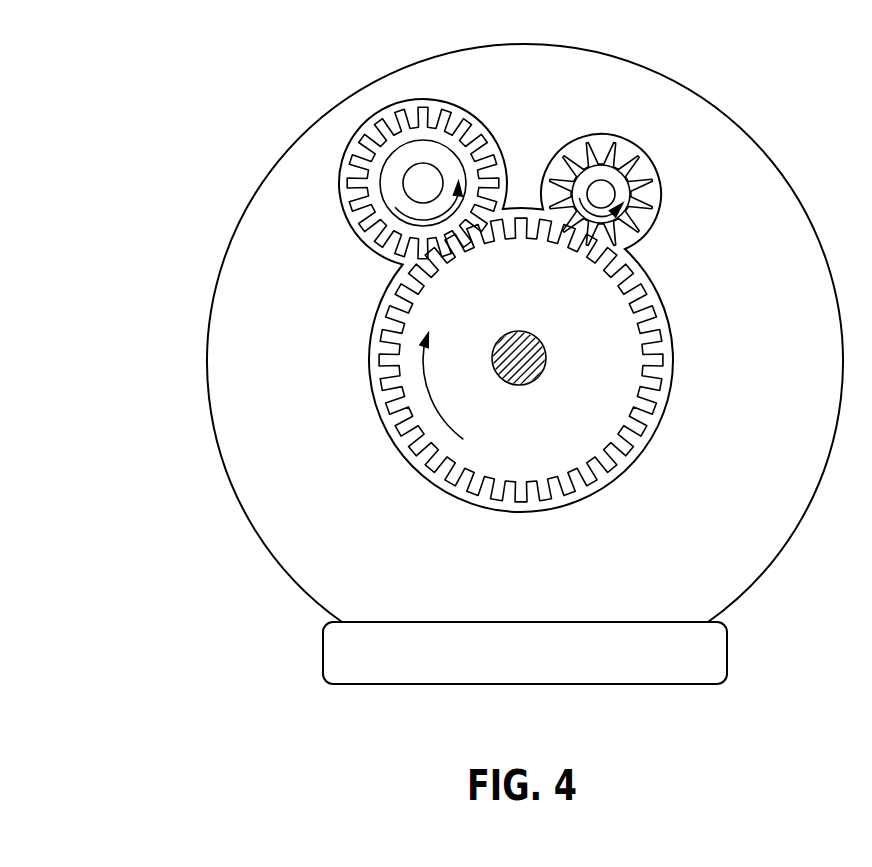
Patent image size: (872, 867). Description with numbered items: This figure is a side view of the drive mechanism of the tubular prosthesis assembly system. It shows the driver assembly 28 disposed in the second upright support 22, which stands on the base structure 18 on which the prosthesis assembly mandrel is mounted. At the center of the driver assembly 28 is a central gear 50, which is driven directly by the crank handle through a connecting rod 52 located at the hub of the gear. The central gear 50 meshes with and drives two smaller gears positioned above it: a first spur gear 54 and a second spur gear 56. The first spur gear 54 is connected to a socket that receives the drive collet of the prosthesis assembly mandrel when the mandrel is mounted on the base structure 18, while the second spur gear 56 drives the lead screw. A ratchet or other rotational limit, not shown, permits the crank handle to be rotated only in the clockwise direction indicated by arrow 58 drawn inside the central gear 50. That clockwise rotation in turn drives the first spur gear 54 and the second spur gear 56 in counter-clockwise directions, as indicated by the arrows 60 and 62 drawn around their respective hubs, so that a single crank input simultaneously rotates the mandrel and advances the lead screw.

The base structure 18 is at (710, 652).
The second upright support 22 is at (773, 160).
The driver assembly 28 is at (187, 95).
The central gear 50 is at (610, 420).
The connecting rod 52 is at (527, 330).
The first spur gear 54 is at (395, 120).
The second spur gear 56 is at (613, 180).
The arrow 58 is at (438, 410).
The arrow 60 is at (403, 217).
The arrow 62 is at (625, 237).